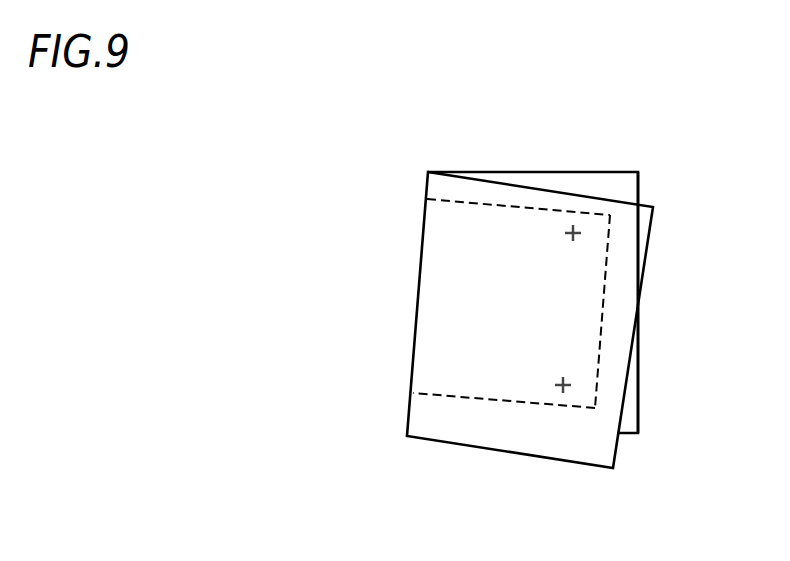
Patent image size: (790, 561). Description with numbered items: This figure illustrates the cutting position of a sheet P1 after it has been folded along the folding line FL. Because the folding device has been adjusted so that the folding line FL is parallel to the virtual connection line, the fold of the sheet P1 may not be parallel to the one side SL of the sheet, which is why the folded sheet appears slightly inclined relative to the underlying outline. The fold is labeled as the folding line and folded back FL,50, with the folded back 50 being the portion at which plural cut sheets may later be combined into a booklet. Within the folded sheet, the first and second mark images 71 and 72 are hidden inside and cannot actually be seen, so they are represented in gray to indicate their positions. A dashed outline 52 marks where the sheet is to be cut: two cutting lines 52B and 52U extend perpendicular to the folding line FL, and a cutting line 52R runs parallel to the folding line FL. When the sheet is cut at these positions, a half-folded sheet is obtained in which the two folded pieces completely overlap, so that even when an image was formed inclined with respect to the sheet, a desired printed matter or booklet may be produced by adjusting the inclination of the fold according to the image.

The sheet P1 is at (545, 172).
The one side of the sheet SL is at (639, 403).
The folding line and folded back FL,50 is at (528, 315).
The folding line FL is at (528, 315).
The folded back 50 is at (412, 370).
The target image region 52 is at (577, 315).
The cutting line 52U is at (490, 203).
The cutting line 52R is at (605, 275).
The cutting line 52B is at (482, 397).
The first mark image 71 is at (563, 385).
The second mark image 72 is at (573, 233).